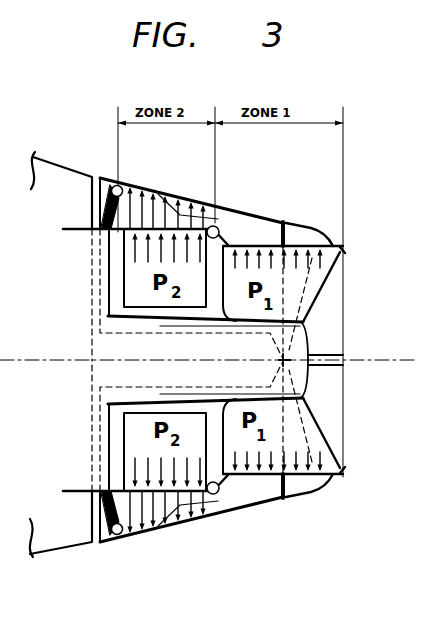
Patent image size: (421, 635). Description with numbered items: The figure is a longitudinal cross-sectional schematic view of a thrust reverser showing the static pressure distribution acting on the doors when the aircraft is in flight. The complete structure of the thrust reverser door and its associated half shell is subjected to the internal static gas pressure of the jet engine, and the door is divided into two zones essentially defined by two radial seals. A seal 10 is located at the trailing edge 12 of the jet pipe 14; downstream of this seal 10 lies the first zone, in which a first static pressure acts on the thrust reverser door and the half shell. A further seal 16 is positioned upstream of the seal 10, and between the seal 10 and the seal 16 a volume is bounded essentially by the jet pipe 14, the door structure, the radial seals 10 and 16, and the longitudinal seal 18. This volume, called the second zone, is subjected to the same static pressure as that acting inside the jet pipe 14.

The seal 10 is at (216, 224).
The trailing edge 12 is at (236, 244).
The jet pipe 14 is at (147, 229).
The seal 16 is at (115, 182).
The longitudinal seal 18 is at (137, 321).